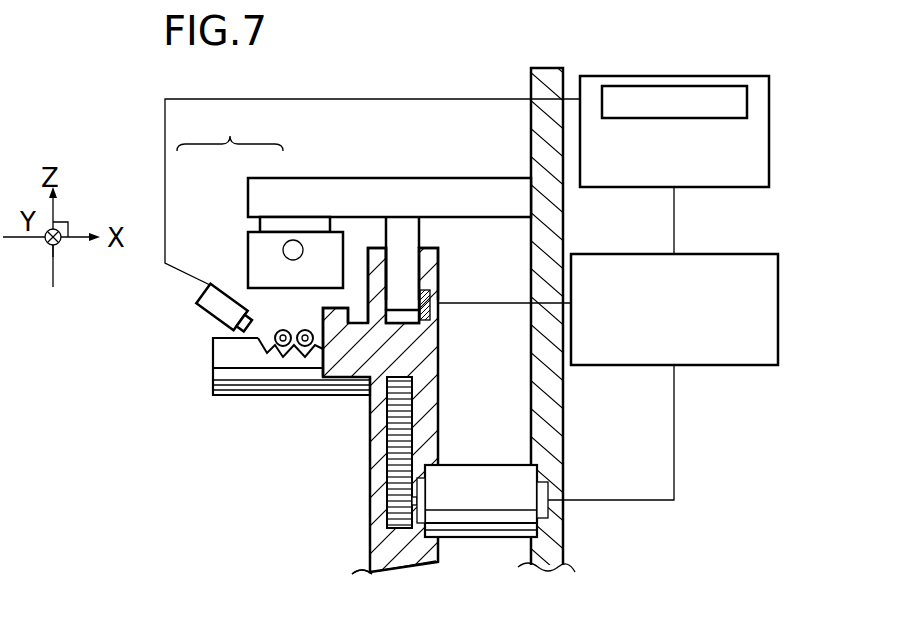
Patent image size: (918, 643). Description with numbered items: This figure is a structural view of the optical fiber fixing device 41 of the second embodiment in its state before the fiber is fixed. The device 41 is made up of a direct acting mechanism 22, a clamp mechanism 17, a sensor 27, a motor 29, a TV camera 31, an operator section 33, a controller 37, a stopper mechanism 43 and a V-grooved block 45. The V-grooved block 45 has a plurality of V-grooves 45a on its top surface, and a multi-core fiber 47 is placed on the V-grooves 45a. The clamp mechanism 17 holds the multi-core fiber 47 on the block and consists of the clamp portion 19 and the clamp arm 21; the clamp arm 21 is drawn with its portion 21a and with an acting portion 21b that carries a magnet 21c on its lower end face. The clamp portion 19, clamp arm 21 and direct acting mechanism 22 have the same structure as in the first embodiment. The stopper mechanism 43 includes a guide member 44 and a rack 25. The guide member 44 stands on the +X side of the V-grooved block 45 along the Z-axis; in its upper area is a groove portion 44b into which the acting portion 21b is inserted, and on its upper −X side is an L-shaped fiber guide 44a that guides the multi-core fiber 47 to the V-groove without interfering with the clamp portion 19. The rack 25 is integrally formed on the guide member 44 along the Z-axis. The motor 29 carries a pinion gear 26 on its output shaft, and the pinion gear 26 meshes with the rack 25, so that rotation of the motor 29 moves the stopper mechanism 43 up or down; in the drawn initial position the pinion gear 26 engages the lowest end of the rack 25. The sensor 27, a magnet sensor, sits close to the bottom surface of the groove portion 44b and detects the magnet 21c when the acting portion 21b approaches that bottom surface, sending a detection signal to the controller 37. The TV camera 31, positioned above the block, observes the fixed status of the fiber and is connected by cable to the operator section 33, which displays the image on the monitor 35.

The clamp mechanism 17 is at (230, 128).
The clamp portion 19 is at (248, 268).
The clamp arm 21 is at (382, 266).
The horizontal portion of support member 21a is at (410, 187).
The acting portion 21b is at (421, 229).
The magnet 21c is at (400, 322).
The direct acting mechanism 22 is at (548, 67).
The rack 25 is at (402, 422).
The pinion gear 26 is at (380, 499).
The sensor 27 is at (431, 312).
The motor 29 is at (462, 538).
The TV camera 31 is at (210, 287).
The operator section 33 is at (714, 101).
The monitor 35 is at (676, 86).
The controller 37 is at (778, 305).
The optical fiber fixing device 41 is at (351, 93).
The stopper mechanism 43 is at (393, 582).
The guide member 44 is at (408, 380).
The fiber guide 44a is at (342, 318).
The groove portion 44b is at (394, 258).
The V-grooved block 45 is at (213, 367).
The V-grooves 45a is at (263, 343).
The multi-core fiber 47 is at (270, 337).